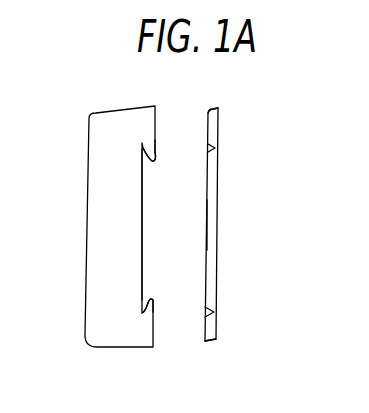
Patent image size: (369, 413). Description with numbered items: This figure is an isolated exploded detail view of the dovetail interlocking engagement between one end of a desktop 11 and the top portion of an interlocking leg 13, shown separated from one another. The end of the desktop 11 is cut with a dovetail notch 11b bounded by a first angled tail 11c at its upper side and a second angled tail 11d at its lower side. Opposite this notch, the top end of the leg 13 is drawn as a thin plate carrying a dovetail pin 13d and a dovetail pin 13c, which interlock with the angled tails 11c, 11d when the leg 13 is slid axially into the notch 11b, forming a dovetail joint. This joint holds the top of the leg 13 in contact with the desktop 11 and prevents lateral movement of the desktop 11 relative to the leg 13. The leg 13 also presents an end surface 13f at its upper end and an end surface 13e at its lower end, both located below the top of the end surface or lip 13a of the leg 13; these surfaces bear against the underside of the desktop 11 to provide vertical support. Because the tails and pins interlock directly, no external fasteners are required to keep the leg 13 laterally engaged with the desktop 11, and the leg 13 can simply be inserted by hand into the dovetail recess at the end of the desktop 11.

The desktop 11 is at (97, 318).
The dovetail notch 11b is at (142, 188).
The first angled tail 11c is at (158, 158).
The second angled tail 11d is at (152, 297).
The interlocking leg 13 is at (218, 122).
The end surface or lip 13a is at (208, 225).
The dovetail pin 13c is at (208, 315).
The dovetail pin 13d is at (212, 148).
The end surface 13e is at (217, 337).
The end surface 13f is at (217, 112).